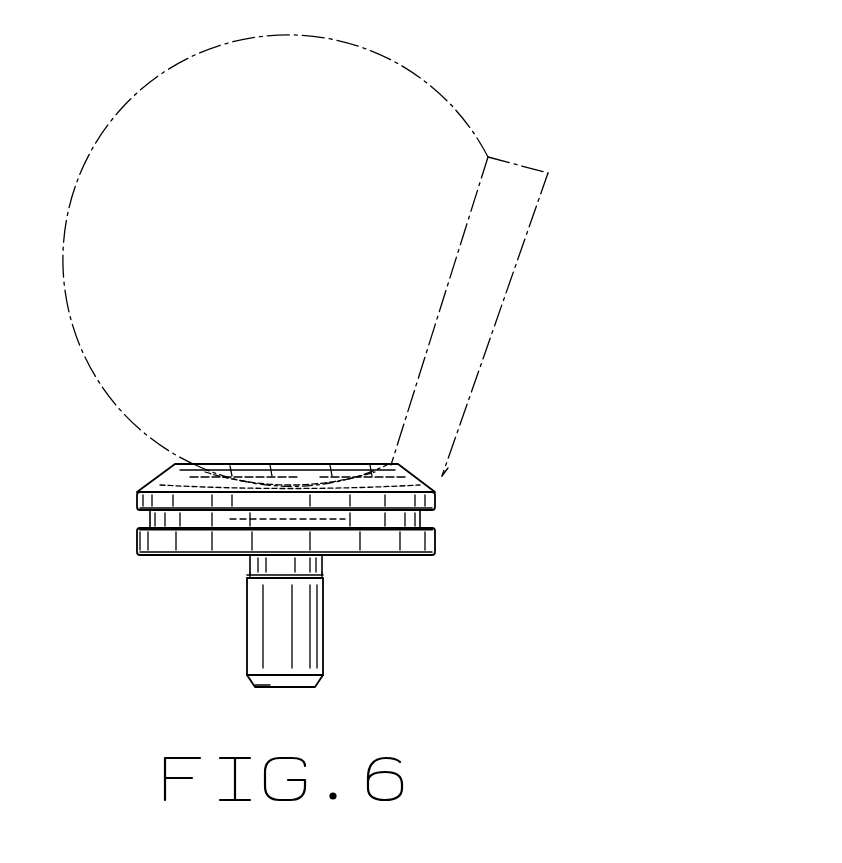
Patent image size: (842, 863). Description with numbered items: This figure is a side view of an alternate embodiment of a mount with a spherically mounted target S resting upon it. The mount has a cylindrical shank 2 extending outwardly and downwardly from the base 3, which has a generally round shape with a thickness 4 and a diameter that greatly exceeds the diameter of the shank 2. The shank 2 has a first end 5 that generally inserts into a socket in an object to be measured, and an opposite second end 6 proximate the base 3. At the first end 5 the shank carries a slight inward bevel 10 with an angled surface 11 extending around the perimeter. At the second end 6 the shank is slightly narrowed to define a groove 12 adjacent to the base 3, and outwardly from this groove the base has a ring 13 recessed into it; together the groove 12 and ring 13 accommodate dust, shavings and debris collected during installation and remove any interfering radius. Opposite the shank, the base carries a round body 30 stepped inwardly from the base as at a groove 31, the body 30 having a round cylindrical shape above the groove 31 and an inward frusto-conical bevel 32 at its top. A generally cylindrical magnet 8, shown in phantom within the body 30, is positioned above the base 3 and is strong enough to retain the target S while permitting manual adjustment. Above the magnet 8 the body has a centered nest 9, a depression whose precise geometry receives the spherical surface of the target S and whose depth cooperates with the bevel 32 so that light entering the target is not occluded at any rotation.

The target S is at (420, 77).
The nest 9 is at (340, 482).
The bevel 32 is at (413, 482).
The body 30 is at (418, 499).
The groove 31 is at (407, 521).
The base 3 is at (422, 542).
The thickness 4 is at (136, 540).
The second end 6 is at (328, 562).
The ring 13 is at (238, 557).
The groove 12 is at (247, 572).
The shank 2 is at (298, 605).
The angled surface 11 is at (320, 682).
The bevel 10 is at (268, 685).
The first end 5 is at (287, 688).
The magnet 8 is at (248, 502).